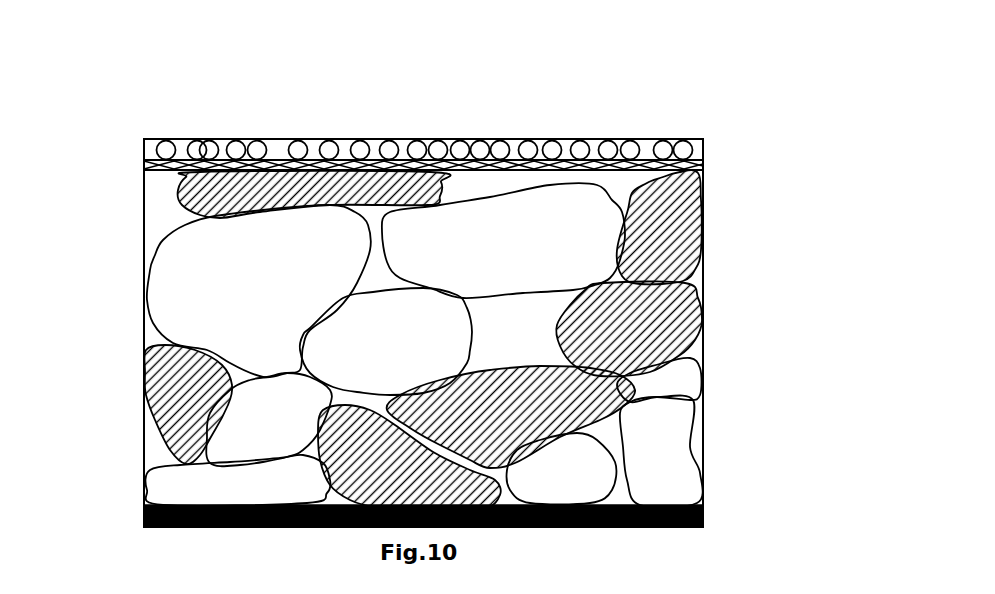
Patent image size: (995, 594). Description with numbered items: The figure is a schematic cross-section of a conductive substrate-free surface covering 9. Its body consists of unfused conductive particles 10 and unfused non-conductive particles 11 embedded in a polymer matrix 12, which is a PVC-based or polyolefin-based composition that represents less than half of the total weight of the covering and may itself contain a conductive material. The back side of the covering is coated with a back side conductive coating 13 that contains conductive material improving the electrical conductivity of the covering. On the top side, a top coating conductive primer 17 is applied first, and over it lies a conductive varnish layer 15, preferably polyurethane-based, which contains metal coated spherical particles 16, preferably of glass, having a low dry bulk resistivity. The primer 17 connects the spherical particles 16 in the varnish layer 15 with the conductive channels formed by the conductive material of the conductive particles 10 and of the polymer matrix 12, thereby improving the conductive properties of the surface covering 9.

The substrate-free surface covering 9 is at (730, 350).
The conductive particles 10 is at (145, 380).
The non-conductive particles 11 is at (165, 322).
The polymer matrix 12 is at (153, 230).
The back side conductive coating 13 is at (142, 508).
The conductive varnish layer 15 is at (698, 132).
The spherical particles 16 is at (205, 141).
The top coating conductive primer 17 is at (722, 153).